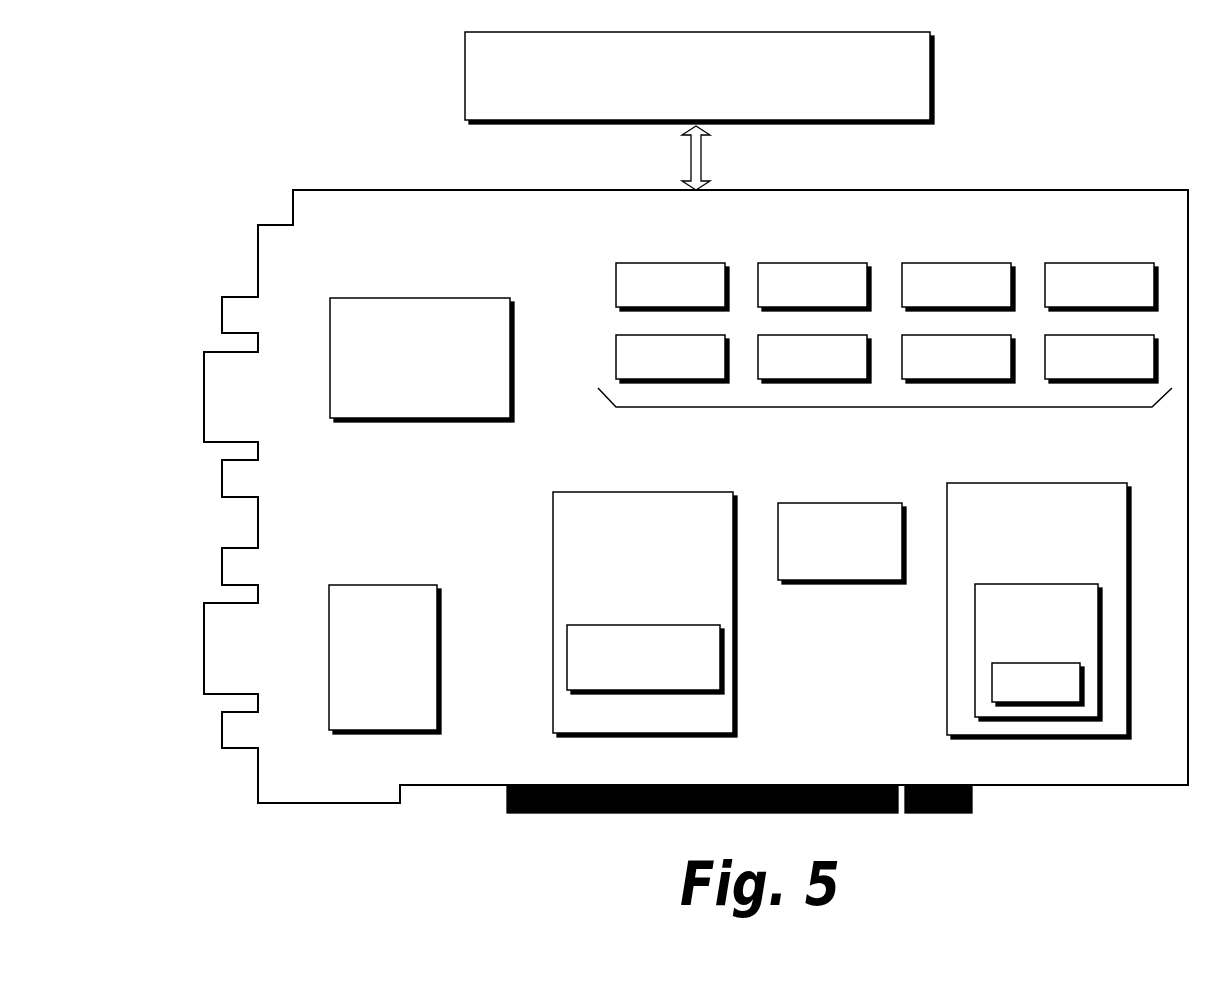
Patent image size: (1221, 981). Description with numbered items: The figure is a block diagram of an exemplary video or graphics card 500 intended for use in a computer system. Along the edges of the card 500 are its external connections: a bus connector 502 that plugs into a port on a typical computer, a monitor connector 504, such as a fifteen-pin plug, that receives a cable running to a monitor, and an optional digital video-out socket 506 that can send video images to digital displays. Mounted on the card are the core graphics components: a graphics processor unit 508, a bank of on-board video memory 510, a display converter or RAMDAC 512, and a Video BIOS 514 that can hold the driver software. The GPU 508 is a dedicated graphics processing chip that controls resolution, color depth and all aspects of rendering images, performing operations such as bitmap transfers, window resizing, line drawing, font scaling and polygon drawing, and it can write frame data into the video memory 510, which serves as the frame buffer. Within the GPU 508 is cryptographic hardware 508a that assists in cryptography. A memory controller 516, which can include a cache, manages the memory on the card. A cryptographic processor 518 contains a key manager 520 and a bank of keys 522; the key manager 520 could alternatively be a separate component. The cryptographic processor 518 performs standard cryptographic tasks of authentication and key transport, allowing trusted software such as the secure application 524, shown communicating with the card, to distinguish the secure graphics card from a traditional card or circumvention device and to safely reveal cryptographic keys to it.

The video card 500 is at (299, 150).
The bus connector 502 is at (593, 813).
The monitor connector 504 is at (204, 603).
The digital video-out socket 506 is at (204, 352).
The graphics processor unit 508 is at (640, 492).
The cryptographic hardware 508a is at (642, 625).
The video memory 510 is at (905, 437).
The random access memory digital-to-analog converter 512 is at (415, 297).
The Video BIOS 514 is at (382, 587).
The memory controller 516 is at (832, 582).
The cryptographic processor 518 is at (1072, 483).
The key manager 520 is at (1042, 584).
The keys 522 is at (992, 683).
The secure application 524 is at (463, 72).